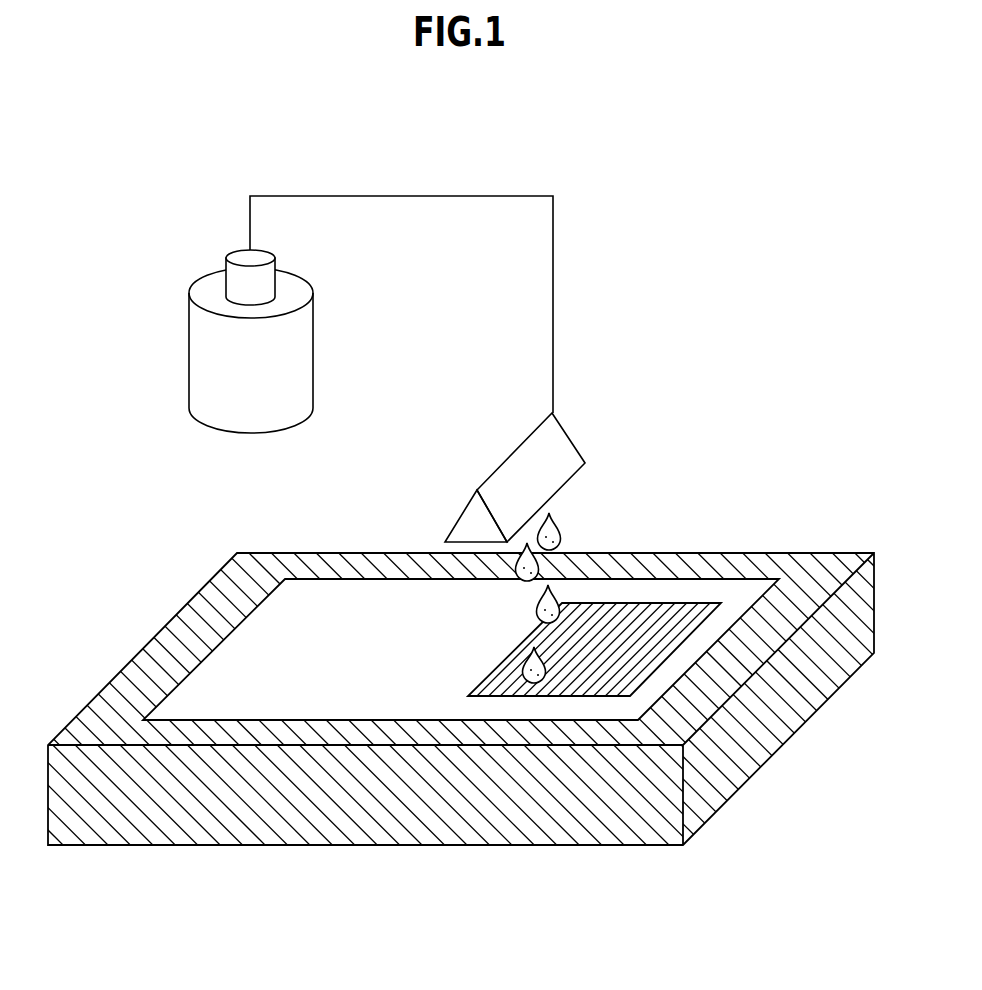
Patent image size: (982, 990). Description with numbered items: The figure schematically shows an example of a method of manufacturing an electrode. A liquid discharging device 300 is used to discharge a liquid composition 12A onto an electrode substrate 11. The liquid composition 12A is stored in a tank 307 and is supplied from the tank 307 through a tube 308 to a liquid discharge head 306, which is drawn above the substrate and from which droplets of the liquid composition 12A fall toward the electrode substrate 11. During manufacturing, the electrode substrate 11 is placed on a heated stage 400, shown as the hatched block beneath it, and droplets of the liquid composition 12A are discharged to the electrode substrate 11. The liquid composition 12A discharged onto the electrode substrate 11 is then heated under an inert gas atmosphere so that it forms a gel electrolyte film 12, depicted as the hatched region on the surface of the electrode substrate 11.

The liquid discharging device 300 is at (387, 328).
The liquid discharge head 306 is at (514, 450).
The tank 307 is at (313, 348).
The tube 308 is at (388, 197).
The electrode substrate 11 is at (735, 597).
The gel electrolyte film 12 is at (663, 613).
The liquid composition 12A is at (561, 525).
The heated stage 400 is at (363, 846).